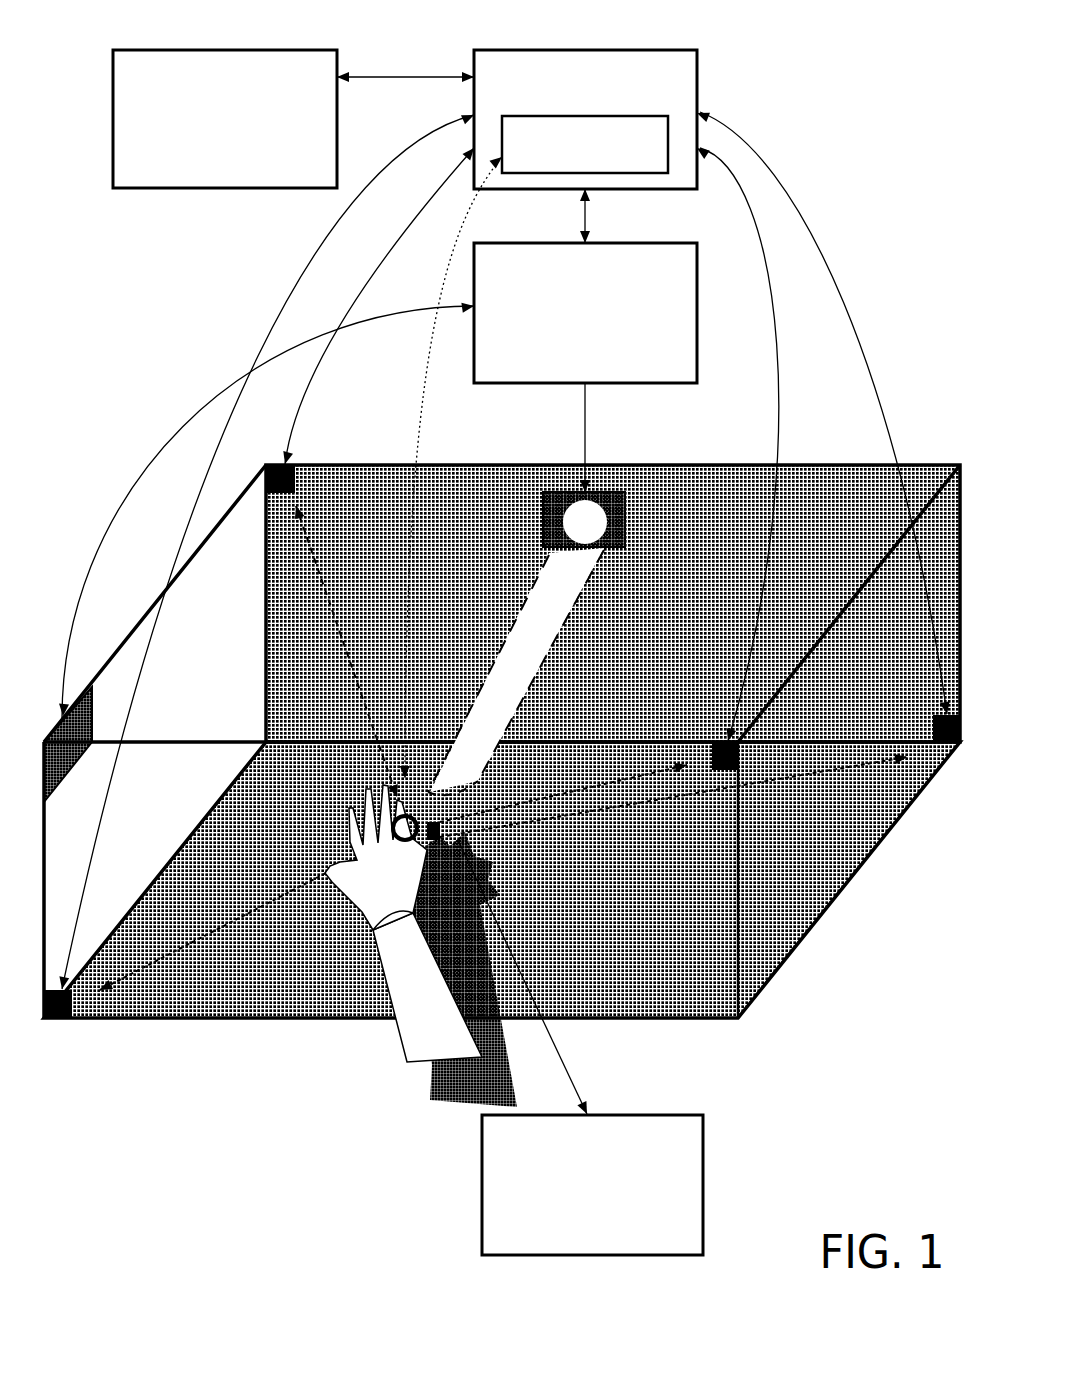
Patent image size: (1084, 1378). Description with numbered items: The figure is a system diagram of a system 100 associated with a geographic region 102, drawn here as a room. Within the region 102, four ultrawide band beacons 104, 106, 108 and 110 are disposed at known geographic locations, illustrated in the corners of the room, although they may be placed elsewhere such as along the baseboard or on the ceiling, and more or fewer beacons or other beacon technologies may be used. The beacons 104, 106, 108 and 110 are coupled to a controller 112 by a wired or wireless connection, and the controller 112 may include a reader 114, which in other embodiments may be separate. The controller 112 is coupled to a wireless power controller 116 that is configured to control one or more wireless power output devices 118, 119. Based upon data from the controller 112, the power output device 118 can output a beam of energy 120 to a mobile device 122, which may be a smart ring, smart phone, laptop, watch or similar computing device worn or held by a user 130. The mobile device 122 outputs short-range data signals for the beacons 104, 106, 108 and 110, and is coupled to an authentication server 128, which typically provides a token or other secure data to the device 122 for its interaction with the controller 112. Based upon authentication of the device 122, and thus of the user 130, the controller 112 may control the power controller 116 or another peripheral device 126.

The system 100 is at (805, 76).
The geographic region 102 is at (695, 541).
The ultrawide band beacon 104 is at (56, 1020).
The ultrawide band beacon 106 is at (293, 463).
The ultrawide band beacon 108 is at (718, 740).
The ultrawide band beacon 110 is at (940, 714).
The controller 112 is at (641, 49).
The reader 114 is at (668, 116).
The wireless power controller 116 is at (657, 243).
The wireless power output device 118 is at (610, 492).
The wireless power output device 119 is at (72, 703).
The beam of energy 120 is at (512, 598).
The mobile device 122 is at (393, 798).
The peripheral device 126 is at (297, 50).
The authentication server 128 is at (657, 1115).
The user 130 is at (393, 1030).